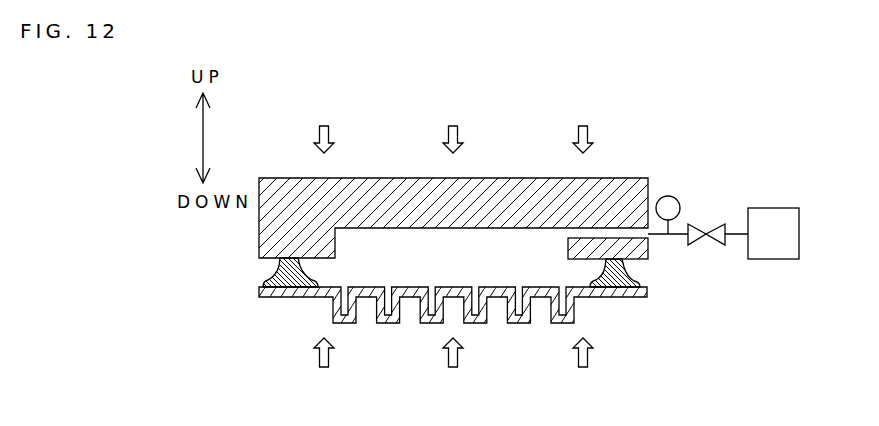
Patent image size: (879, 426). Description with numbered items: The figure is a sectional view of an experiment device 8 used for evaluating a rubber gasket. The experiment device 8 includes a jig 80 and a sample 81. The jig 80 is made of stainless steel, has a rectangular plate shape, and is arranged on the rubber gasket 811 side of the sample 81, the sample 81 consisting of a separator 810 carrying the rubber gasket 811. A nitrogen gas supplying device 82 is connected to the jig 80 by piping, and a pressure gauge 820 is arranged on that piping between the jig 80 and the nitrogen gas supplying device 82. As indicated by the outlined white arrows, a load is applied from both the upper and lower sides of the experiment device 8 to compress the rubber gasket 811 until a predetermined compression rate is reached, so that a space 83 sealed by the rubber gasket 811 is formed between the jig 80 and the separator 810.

The experiment device 8 is at (660, 153).
The jig 80 is at (283, 180).
The space 83 is at (472, 266).
The pressure gauge 820 is at (676, 199).
The nitrogen gas supplying device 82 is at (773, 208).
The sample 81 is at (724, 285).
The rubber gasket 811 is at (632, 272).
The separator 810 is at (613, 298).